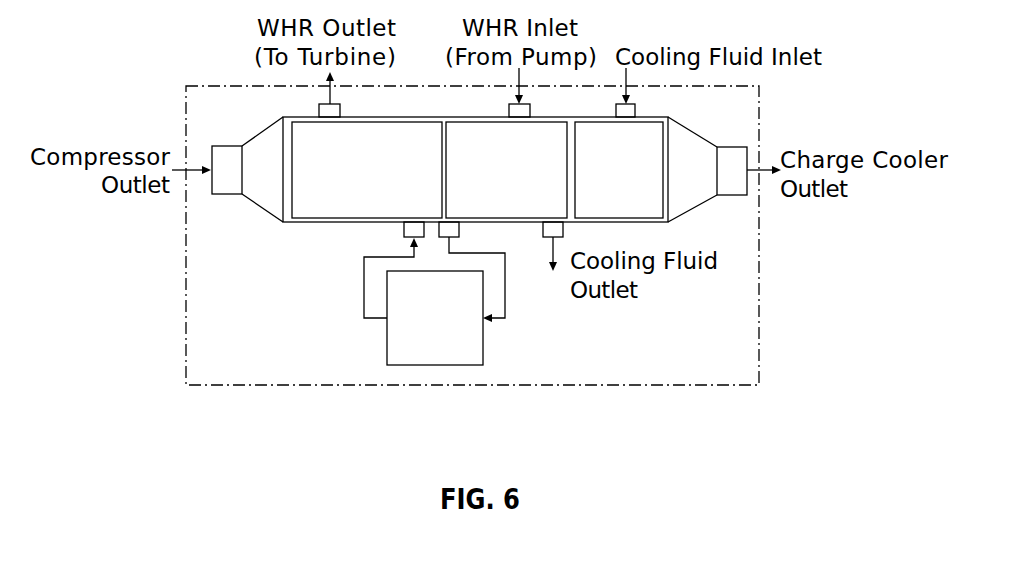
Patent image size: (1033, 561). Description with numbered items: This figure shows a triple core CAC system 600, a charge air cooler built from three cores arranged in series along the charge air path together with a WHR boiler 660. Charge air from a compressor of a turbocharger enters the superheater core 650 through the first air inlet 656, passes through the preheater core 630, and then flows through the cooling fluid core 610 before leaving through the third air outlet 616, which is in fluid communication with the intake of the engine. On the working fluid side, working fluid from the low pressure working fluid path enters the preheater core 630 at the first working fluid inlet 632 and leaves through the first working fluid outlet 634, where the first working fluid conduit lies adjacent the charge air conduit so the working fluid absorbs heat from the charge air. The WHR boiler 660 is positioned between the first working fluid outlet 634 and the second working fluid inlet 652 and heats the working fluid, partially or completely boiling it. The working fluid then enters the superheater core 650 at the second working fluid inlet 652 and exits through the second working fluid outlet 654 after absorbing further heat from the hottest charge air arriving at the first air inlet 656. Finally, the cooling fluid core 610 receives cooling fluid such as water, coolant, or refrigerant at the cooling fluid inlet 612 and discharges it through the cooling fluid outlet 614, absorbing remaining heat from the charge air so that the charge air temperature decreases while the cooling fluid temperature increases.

The triple core CAC system 600 is at (250, 78).
The cooling fluid core 610 is at (652, 195).
The cooling fluid inlet 612 is at (634, 115).
The cooling fluid outlet 614 is at (545, 233).
The third air outlet 616 is at (709, 157).
The preheater core 630 is at (487, 145).
The first working fluid inlet 632 is at (524, 115).
The first working fluid outlet 634 is at (457, 232).
The superheater core 650 is at (326, 208).
The second working fluid inlet 652 is at (404, 231).
The second working fluid outlet 654 is at (331, 114).
The first air inlet 656 is at (221, 180).
The WHR boiler 660 is at (387, 337).